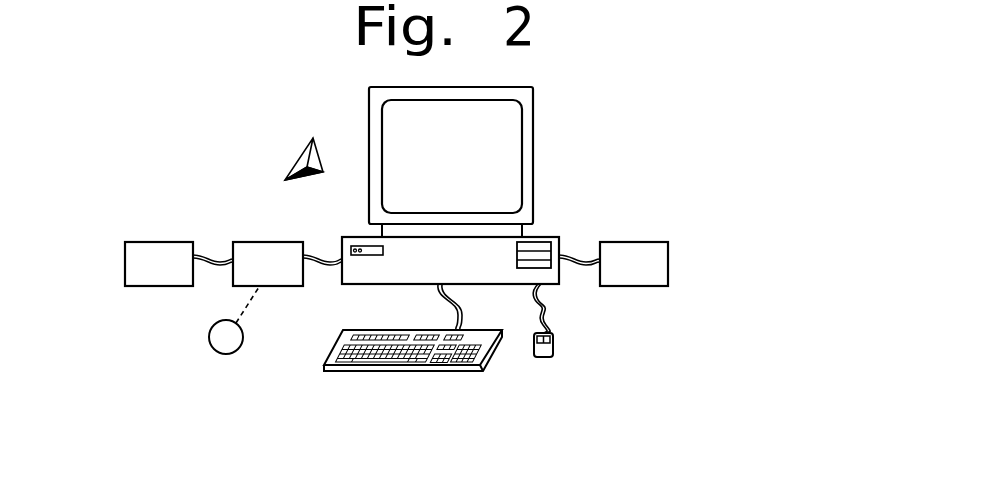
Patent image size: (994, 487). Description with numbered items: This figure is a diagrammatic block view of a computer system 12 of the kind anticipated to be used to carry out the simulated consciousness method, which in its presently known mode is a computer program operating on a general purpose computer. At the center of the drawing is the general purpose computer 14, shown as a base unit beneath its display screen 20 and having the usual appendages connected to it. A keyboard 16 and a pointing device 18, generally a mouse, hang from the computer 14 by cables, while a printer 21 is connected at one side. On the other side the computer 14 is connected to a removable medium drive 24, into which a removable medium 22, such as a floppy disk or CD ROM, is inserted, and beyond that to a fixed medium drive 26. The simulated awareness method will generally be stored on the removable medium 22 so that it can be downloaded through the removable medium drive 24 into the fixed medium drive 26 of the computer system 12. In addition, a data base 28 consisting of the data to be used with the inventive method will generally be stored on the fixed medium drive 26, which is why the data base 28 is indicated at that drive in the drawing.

The computer system 12 is at (307, 167).
The general purpose computer 14 is at (467, 269).
The keyboard 16 is at (335, 352).
The pointing device 18 is at (534, 348).
The display screen 20 is at (497, 148).
The printer 21 is at (660, 277).
The removable medium 22 is at (209, 333).
The removable medium drive 24 is at (295, 277).
The fixed medium drive 26 is at (180, 277).
The data base 28 is at (125, 268).